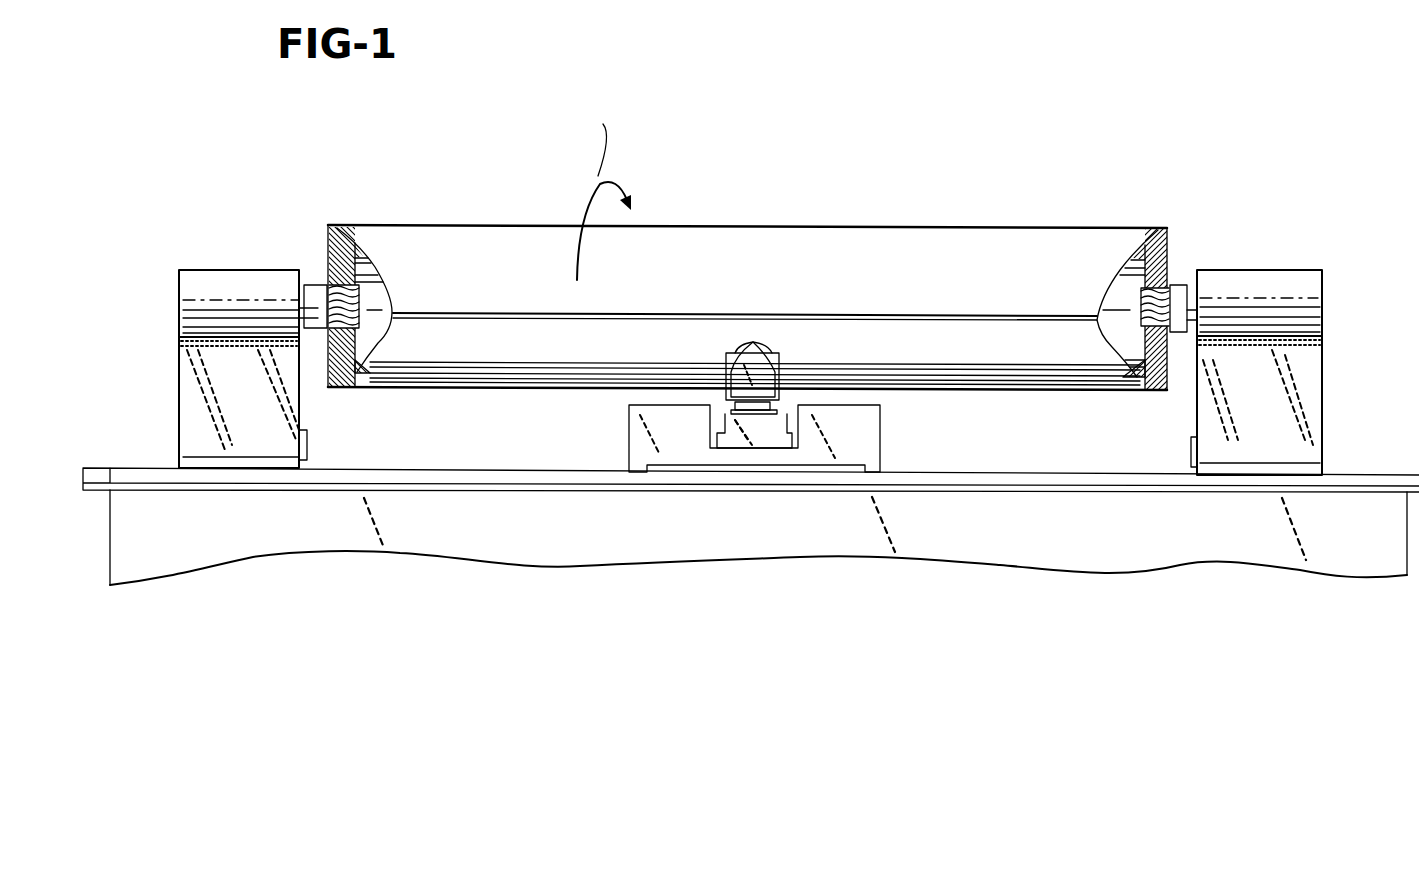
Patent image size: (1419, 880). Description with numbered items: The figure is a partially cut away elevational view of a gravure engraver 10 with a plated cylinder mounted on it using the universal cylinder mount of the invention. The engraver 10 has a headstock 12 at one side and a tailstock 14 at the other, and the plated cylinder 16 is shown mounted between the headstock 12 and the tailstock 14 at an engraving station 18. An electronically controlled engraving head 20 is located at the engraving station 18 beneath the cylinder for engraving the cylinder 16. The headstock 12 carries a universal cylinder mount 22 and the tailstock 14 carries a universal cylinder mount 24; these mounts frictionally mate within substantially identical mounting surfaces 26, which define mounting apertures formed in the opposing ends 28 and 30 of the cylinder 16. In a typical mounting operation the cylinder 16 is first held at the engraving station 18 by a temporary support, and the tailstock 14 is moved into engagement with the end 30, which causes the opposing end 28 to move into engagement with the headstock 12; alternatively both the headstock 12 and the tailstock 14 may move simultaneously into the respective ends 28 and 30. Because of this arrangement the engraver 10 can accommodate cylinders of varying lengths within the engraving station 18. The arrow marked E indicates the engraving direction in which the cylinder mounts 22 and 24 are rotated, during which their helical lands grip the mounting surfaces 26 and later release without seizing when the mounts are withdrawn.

The gravure engraver 10 is at (295, 166).
The headstock 12 is at (230, 270).
The tailstock 14 is at (1283, 270).
The plated cylinder 16 is at (1142, 240).
The engraving station 18 is at (898, 227).
The electronically controlled engraving head 20 is at (757, 350).
The universal cylinder mount 22 is at (313, 285).
The universal cylinder mount 24 is at (1180, 288).
The mounting surface 26 is at (366, 300).
The end of the cylinder 28 is at (337, 362).
The end of the cylinder 30 is at (1168, 357).